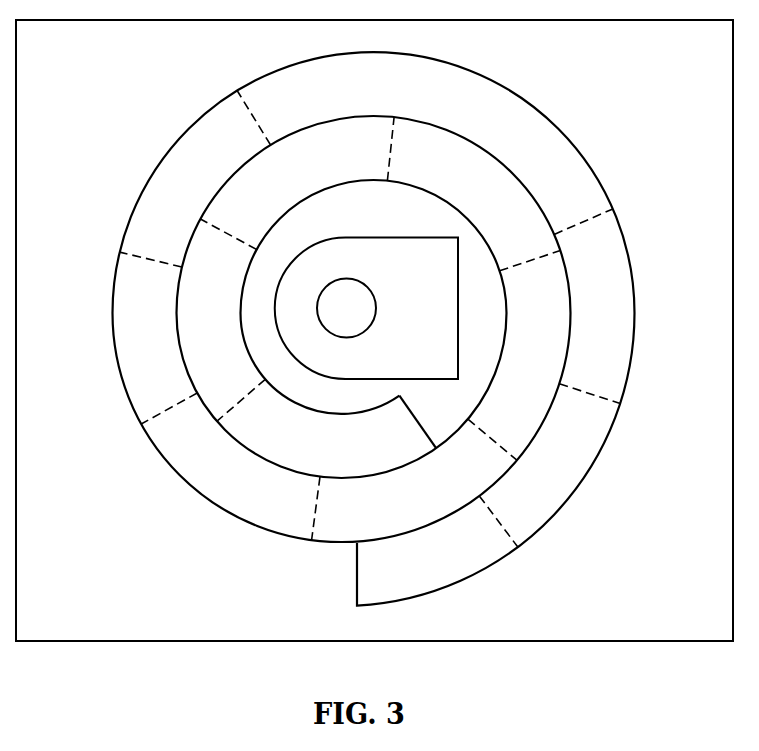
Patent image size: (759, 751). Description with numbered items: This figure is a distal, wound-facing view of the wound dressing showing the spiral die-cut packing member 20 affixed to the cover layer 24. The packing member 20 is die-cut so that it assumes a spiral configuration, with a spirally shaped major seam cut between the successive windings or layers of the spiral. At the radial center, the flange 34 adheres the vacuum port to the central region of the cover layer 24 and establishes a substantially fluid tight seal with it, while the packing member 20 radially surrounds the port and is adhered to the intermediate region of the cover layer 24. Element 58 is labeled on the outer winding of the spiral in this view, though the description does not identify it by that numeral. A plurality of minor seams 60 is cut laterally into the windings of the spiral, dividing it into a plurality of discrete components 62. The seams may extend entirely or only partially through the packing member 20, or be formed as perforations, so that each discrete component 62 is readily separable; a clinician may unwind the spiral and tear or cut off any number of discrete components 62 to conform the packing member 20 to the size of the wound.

The packing member 20 is at (628, 220).
The cover layer 24 is at (624, 100).
The flange 34 is at (428, 313).
The outer wrap 58 is at (570, 360).
The minor seams 60 is at (598, 396).
The discrete components 62 is at (414, 505).